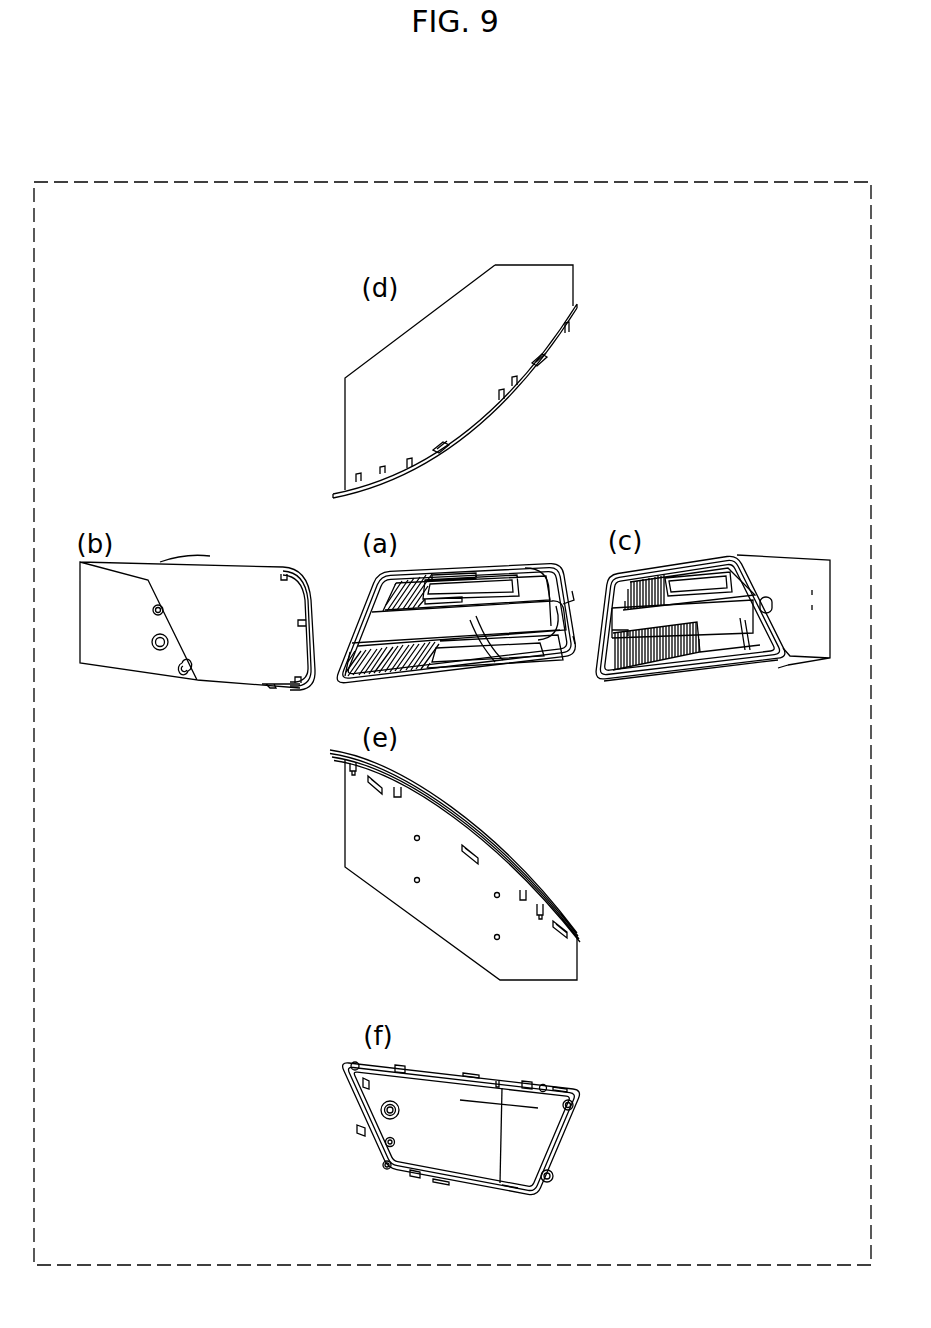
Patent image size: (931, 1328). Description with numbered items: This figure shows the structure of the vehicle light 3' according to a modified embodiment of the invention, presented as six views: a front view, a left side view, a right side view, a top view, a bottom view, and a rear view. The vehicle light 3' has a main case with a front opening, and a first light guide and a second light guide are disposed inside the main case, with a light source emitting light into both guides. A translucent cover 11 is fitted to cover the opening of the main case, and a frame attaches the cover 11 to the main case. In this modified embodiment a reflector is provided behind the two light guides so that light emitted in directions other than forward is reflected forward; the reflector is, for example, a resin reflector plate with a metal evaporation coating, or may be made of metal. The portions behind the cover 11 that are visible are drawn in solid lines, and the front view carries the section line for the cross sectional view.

The vehicle light 3' is at (799, 281).
The translucent cover 11 is at (487, 837).